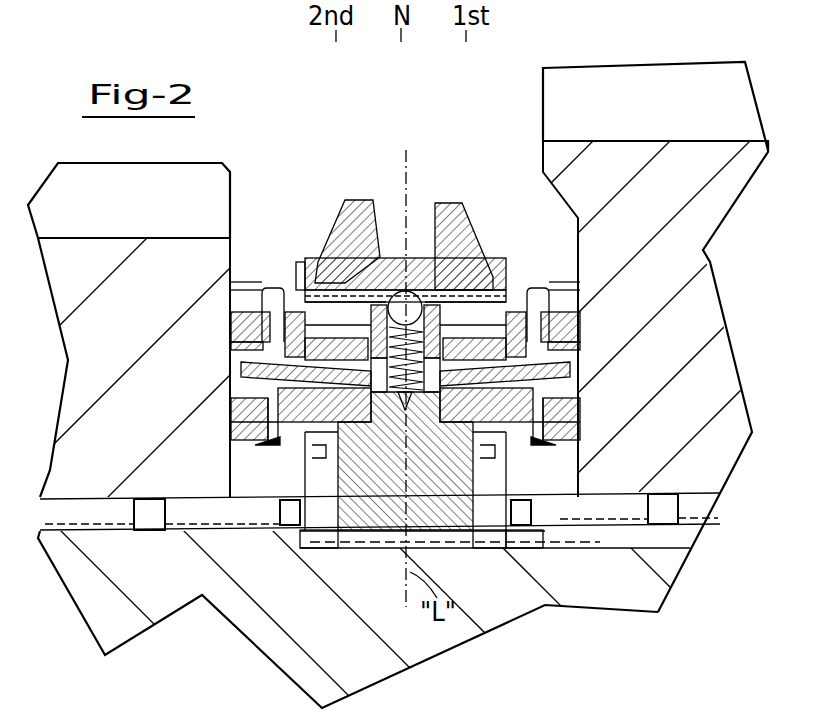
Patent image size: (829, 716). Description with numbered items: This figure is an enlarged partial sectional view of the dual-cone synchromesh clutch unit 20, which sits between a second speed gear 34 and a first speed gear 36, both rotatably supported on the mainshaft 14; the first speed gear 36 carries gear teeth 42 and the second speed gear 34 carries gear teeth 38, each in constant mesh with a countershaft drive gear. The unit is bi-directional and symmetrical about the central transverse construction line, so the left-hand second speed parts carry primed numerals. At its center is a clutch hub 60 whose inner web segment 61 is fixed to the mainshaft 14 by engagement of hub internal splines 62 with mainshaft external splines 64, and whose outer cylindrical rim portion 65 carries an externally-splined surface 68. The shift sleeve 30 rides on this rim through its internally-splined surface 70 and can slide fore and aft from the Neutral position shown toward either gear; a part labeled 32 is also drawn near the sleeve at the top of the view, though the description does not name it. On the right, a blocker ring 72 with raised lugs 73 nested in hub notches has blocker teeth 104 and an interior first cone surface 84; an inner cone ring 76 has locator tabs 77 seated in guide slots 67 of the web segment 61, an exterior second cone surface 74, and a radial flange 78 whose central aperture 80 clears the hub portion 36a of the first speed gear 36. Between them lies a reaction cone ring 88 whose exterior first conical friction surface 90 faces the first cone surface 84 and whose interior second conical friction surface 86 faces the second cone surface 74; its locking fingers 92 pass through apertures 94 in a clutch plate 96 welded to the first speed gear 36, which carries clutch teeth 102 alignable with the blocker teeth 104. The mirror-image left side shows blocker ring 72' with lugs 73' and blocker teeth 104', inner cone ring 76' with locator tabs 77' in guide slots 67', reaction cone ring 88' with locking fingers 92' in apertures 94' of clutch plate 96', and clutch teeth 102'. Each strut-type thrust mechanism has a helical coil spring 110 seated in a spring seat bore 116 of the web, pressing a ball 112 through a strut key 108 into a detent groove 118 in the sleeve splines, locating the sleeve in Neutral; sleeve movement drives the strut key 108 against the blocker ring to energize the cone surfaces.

The mainshaft 14 is at (597, 598).
The dual-cone synchromesh clutch unit 20 is at (288, 166).
The shift sleeve 30 is at (446, 230).
The shift fork 32 is at (425, 258).
The second speed gear 34 is at (128, 337).
The first speed gear 36 is at (688, 322).
The hub portion 36a is at (555, 557).
The gear teeth 38 is at (105, 185).
The gear teeth 42 is at (710, 103).
The clutch hub 60 is at (360, 538).
The inner web segment 61 is at (388, 527).
The hub internal splines 62 is at (497, 540).
The mainshaft external splines 64 is at (370, 534).
The outer cylindrical rim portion 65 is at (478, 320).
The guide slots 67 is at (478, 605).
The guide slots 67' is at (239, 563).
The externally-splined surface 68 is at (320, 280).
The internally-splined surface 70 is at (300, 272).
The blocker ring 72 is at (494, 260).
The blocker ring 72' is at (272, 298).
The raised lugs 73 is at (548, 327).
The raised lugs 73' is at (268, 361).
The second cone surface 74 is at (560, 400).
The inner cone ring 76 is at (569, 438).
The inner cone ring 76' is at (194, 486).
The locator tabs 77 is at (484, 512).
The locator tabs 77' is at (289, 478).
The radial flange 78 is at (517, 440).
The central aperture 80 is at (512, 468).
The first cone surface 84 is at (548, 342).
The second conical friction surface 86 is at (568, 418).
The reaction cone ring 88 is at (600, 370).
The reaction cone ring 88' is at (188, 388).
The first conical friction surface 90 is at (560, 326).
The locking fingers 92 is at (548, 338).
The locking fingers 92' is at (252, 356).
The apertures 94 is at (603, 423).
The apertures 94' is at (194, 432).
The clutch plate 96 is at (583, 467).
The clutch plate 96' is at (227, 465).
The clutch teeth 102 is at (596, 261).
The clutch teeth 102' is at (198, 293).
The blocker teeth 104 is at (545, 286).
The blocker teeth 104' is at (209, 292).
The strut key 108 is at (390, 295).
The helical coil spring 110 is at (365, 215).
The ball 112 is at (404, 290).
The spring seat bore 116 is at (367, 540).
The detent groove 118 is at (402, 292).